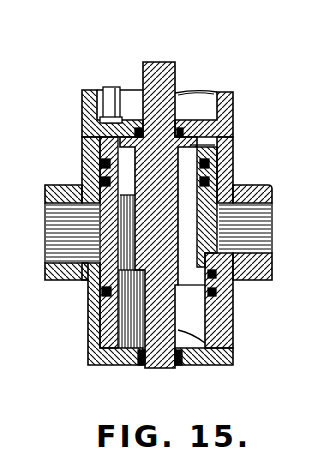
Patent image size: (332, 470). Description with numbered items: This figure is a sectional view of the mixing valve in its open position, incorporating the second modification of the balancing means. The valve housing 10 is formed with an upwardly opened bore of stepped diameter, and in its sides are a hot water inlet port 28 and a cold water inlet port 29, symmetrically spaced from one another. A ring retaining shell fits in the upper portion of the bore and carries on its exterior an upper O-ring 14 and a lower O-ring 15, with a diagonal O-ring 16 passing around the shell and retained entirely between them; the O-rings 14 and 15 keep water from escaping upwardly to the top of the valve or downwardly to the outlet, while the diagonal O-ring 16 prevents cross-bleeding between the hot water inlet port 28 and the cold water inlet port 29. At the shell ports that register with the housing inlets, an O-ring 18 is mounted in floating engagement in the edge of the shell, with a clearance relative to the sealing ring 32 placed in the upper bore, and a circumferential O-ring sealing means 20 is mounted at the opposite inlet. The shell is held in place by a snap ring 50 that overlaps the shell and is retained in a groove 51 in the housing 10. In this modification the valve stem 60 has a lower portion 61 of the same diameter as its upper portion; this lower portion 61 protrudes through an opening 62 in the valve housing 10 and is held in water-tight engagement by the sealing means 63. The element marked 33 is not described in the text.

The valve housing 10 is at (87, 317).
The upper O-ring 14 is at (100, 162).
The lower O-ring 15 is at (103, 291).
The diagonal O-ring 16 is at (100, 181).
The O-ring 18 is at (238, 250).
The circumferential O-ring sealing means 20 is at (108, 247).
The hot water inlet port 28 is at (255, 229).
The cold water inlet port 29 is at (80, 236).
The sealing ring 32 is at (233, 147).
The sleeve 33 is at (228, 186).
The snap ring 50 is at (113, 87).
The groove 51 is at (202, 118).
The valve stem 60 is at (181, 63).
The lower portion of valve stem 61 is at (207, 345).
The opening 62 is at (178, 367).
The sealing means 63 is at (142, 367).